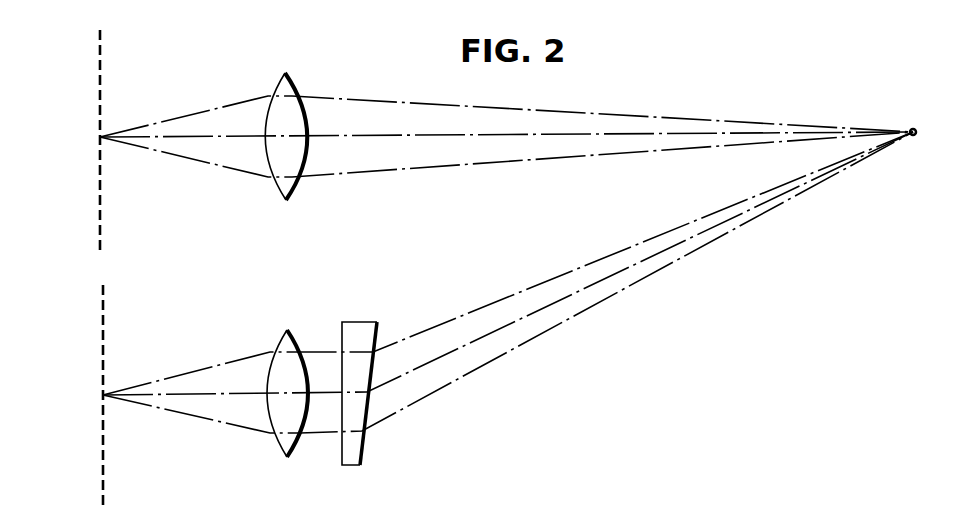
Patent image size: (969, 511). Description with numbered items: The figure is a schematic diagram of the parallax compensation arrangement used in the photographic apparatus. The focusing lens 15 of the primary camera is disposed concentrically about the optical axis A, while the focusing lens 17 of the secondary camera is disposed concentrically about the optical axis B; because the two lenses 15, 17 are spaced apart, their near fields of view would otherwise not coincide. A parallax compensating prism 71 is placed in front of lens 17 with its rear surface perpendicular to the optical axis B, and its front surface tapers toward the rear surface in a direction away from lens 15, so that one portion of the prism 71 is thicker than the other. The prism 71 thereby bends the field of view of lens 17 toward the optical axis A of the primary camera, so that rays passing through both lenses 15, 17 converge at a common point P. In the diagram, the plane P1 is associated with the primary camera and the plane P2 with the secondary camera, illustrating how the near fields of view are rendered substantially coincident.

The focusing lens 15 is at (285, 73).
The focusing lens 17 is at (288, 329).
The parallax compensating prism 71 is at (378, 322).
The optical axis A is at (228, 138).
The optical axis B is at (205, 395).
The image point P is at (910, 115).
The first object plane P1 is at (77, 141).
The second object plane P2 is at (79, 395).